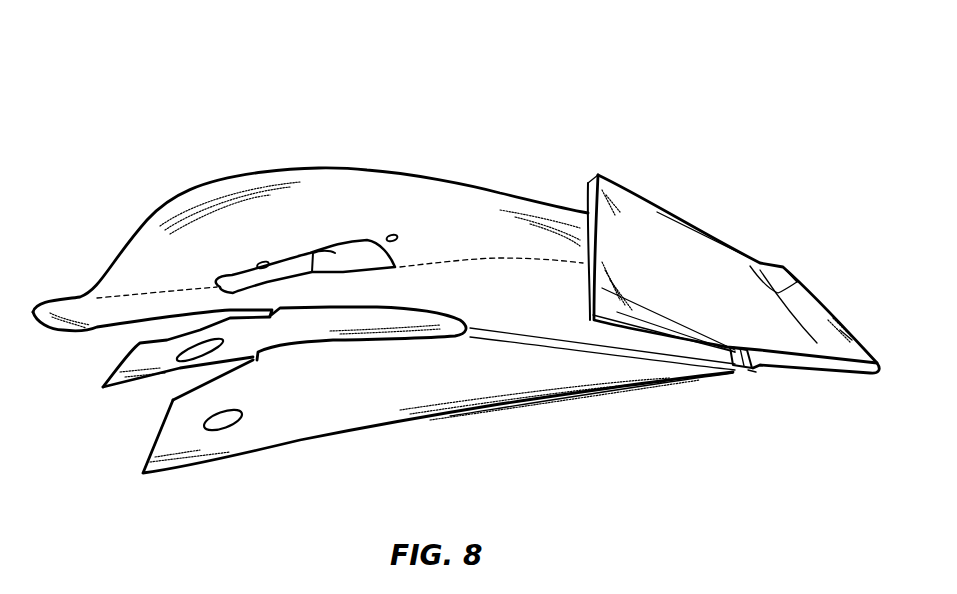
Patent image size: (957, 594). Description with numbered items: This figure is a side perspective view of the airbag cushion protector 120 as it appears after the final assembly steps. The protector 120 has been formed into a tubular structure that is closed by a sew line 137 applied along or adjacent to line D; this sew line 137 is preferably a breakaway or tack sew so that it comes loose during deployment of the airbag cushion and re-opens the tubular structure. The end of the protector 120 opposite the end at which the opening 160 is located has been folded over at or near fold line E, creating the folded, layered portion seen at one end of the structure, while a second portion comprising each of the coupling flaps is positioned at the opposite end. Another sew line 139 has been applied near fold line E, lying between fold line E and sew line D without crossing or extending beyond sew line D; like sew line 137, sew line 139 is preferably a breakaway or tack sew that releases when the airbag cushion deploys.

The airbag cushion protector 120 is at (456, 268).
The opening 160 is at (347, 264).
The sew line 139 is at (797, 283).
The sew line 137 is at (737, 373).
The fold line E is at (845, 326).
The line D is at (752, 373).